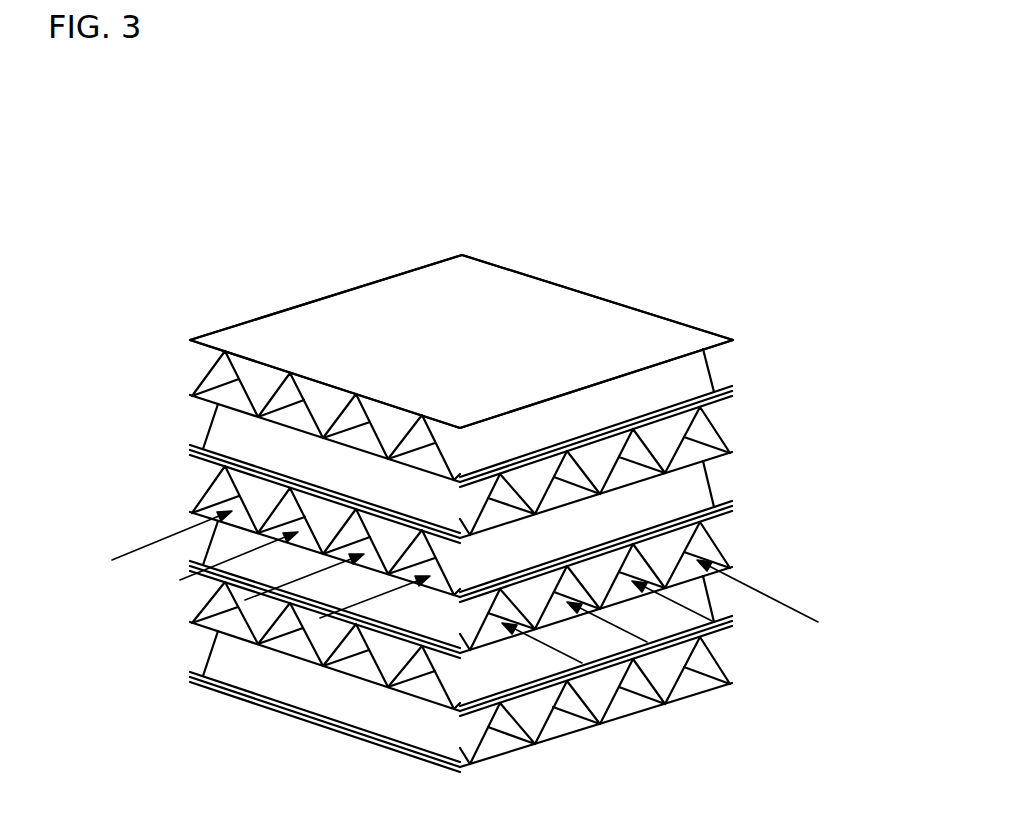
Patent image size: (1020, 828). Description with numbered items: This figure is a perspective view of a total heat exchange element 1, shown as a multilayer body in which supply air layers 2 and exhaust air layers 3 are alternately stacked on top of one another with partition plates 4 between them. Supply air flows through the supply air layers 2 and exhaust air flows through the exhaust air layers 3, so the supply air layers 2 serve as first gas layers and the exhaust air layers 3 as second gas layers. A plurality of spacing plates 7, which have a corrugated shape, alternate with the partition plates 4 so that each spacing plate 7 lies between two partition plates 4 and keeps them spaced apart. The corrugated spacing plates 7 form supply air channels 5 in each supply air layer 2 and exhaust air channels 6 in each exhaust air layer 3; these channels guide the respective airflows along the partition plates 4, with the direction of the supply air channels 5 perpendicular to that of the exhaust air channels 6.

The total heat exchange element 1 is at (580, 254).
The supply air layer 2 is at (128, 557).
The exhaust air layer 3 is at (748, 598).
The partition plate 4 is at (630, 320).
The supply air channel 5 is at (285, 395).
The exhaust air channel 6 is at (702, 542).
The spacing plate 7 is at (722, 429).